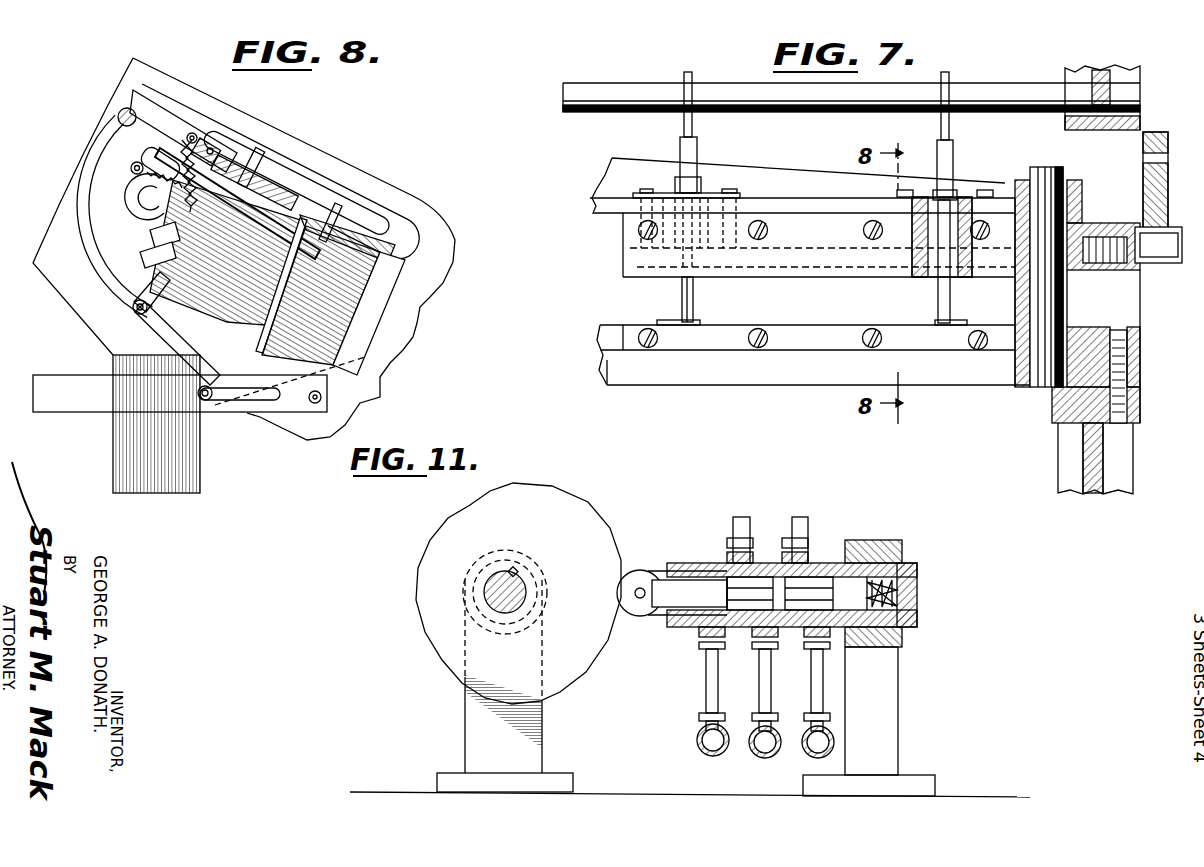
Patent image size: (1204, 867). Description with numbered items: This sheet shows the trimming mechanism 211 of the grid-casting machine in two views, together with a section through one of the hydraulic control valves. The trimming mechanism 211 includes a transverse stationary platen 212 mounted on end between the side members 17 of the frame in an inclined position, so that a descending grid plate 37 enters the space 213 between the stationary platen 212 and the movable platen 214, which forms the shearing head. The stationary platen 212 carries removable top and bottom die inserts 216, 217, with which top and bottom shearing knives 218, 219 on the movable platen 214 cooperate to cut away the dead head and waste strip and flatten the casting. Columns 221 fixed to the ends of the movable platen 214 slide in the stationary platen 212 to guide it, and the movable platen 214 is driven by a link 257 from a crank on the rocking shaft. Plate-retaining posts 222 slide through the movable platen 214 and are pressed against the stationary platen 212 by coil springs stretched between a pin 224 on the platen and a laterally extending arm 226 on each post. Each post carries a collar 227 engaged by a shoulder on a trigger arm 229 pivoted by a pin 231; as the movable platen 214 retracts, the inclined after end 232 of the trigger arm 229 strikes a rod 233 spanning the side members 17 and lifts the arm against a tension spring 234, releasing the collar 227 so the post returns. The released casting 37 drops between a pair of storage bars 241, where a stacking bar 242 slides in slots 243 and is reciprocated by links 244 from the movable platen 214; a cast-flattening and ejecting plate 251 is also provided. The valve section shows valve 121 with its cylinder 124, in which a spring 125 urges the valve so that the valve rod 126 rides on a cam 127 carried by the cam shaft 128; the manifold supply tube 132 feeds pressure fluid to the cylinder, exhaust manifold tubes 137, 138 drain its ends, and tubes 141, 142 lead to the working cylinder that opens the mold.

In FIG. 7, the side members 17 is at (1063, 480).
In FIG. 7, the grid plate 37 is at (805, 322).
In FIG. 11, the valve 121 is at (937, 597).
In FIG. 11, the cylinder 124 is at (823, 563).
In FIG. 11, the spring 125 is at (897, 570).
In FIG. 11, the valve rod 126 is at (685, 582).
In FIG. 11, the cam 127 is at (570, 513).
In FIG. 11, the cam shaft 128 is at (487, 599).
In FIG. 11, the manifold supply tube 132 is at (758, 754).
In FIG. 11, the exhaust manifold tube 137 is at (698, 743).
In FIG. 11, the exhaust manifold tube 138 is at (830, 737).
In FIG. 11, the tube 141 is at (807, 523).
In FIG. 11, the tube 142 is at (750, 523).
In FIG. 8, the trimming mechanism 211 is at (446, 191).
In FIG. 7, the trimming mechanism 211 is at (1020, 428).
In FIG. 8, the stationary platen 212 is at (400, 317).
In FIG. 7, the stationary platen 212 is at (955, 373).
In FIG. 7, the space 213 is at (682, 304).
In FIG. 8, the movable platen 214 is at (264, 163).
In FIG. 8, the top die insert 216 is at (337, 234).
In FIG. 7, the top die insert 216 is at (703, 342).
In FIG. 8, the bottom die insert 217 is at (353, 352).
In FIG. 8, the top shearing knife 218 is at (294, 177).
In FIG. 7, the top shearing knife 218 is at (627, 265).
In FIG. 8, the bottom shearing knife 219 is at (326, 208).
In FIG. 8, the columns 221 is at (272, 285).
In FIG. 7, the columns 221 is at (1067, 301).
In FIG. 8, the plate-retaining posts 222 is at (348, 263).
In FIG. 7, the plate-retaining posts 222 is at (695, 301).
In FIG. 8, the pin 224 is at (160, 226).
In FIG. 8, the laterally extending arm 226 is at (147, 154).
In FIG. 8, the collar 227 is at (240, 142).
In FIG. 7, the collar 227 is at (945, 192).
In FIG. 8, the trigger arm 229 is at (150, 182).
In FIG. 8, the pin 231 is at (215, 132).
In FIG. 8, the inclined after end 232 is at (133, 93).
In FIG. 8, the rod 233 is at (118, 117).
In FIG. 7, the rod 233 is at (1018, 93).
In FIG. 8, the tension spring 234 is at (193, 131).
In FIG. 8, the storage bars 241 is at (80, 403).
In FIG. 8, the stacking bar 242 is at (203, 402).
In FIG. 8, the slots 243 is at (270, 405).
In FIG. 8, the links 244 is at (160, 338).
In FIG. 8, the cast-flattening and ejecting plate 251 is at (235, 350).
In FIG. 7, the cast-flattening and ejecting plate 251 is at (921, 282).
In FIG. 7, the link 257 is at (1143, 193).